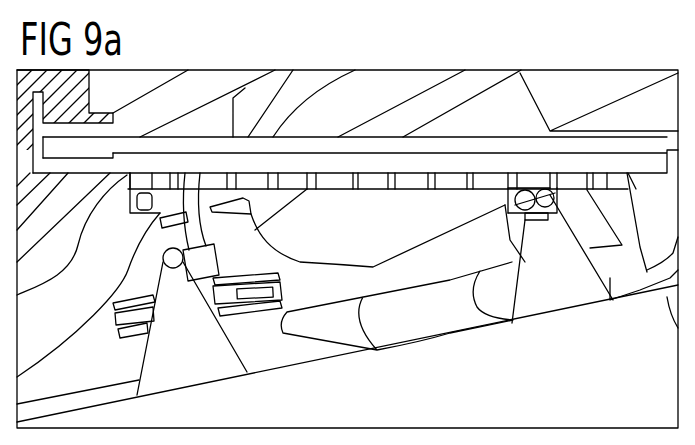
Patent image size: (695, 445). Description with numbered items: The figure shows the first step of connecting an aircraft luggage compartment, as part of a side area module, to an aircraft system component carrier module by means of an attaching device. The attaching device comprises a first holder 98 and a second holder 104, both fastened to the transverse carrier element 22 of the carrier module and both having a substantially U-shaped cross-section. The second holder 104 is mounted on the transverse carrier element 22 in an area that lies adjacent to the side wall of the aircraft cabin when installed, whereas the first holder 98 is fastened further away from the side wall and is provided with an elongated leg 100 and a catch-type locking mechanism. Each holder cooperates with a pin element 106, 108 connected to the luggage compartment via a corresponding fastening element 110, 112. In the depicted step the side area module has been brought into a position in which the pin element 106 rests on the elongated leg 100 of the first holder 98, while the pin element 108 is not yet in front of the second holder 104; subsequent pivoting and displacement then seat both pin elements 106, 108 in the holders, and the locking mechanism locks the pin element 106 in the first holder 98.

The transverse carrier element 22 is at (312, 144).
The first holder 98 is at (510, 197).
The elongated leg 100 is at (550, 220).
The second holder 104 is at (158, 182).
The pin element 106 is at (547, 200).
The pin element 108 is at (173, 268).
The fastening element 110 is at (557, 300).
The fastening element 112 is at (200, 368).